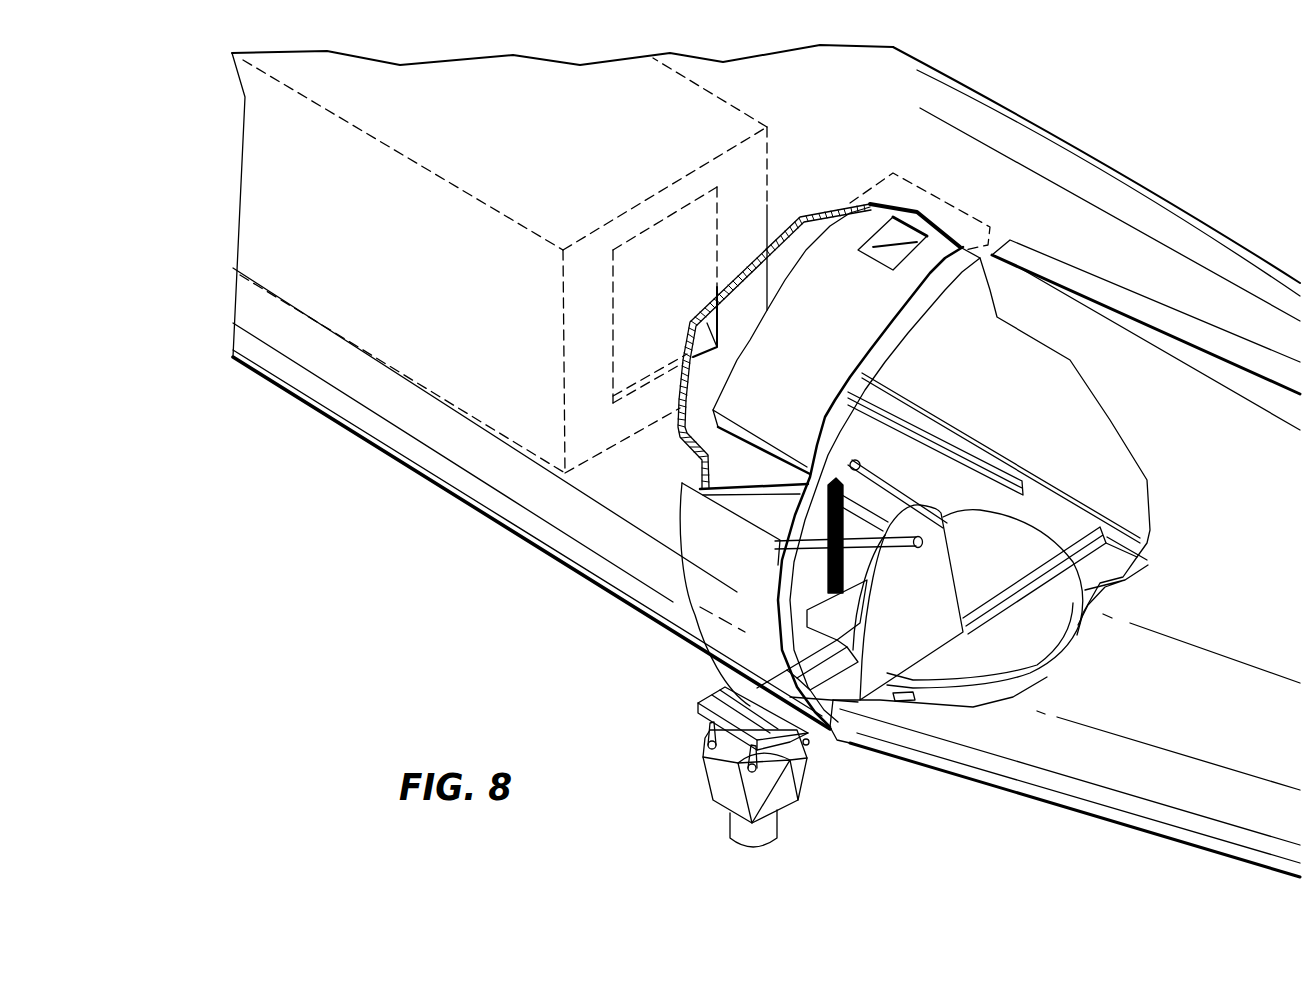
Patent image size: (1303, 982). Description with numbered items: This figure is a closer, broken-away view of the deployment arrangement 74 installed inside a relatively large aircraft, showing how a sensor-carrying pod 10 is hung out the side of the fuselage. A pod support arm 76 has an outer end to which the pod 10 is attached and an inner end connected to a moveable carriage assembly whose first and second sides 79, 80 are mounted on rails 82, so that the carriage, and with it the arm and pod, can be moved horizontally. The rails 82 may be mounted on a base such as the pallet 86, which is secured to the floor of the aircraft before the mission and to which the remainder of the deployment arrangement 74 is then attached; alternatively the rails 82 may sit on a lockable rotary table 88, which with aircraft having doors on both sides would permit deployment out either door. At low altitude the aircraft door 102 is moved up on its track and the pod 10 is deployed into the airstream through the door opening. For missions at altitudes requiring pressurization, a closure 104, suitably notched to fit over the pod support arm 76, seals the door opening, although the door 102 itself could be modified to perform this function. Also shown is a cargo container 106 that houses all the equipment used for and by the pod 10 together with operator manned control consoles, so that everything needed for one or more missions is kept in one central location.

The pod 10 is at (688, 788).
The deployment arrangement 74 is at (929, 483).
The pod support arm 76 is at (698, 705).
The first side of carriage assembly 79 is at (859, 466).
The second side of carriage assembly 80 is at (940, 575).
The rails 82 is at (1095, 525).
The pallet 86 is at (1108, 562).
The rotary table 88 is at (1025, 640).
The aircraft door 102 is at (838, 245).
The closure 104 is at (698, 517).
The cargo container 106 is at (633, 323).